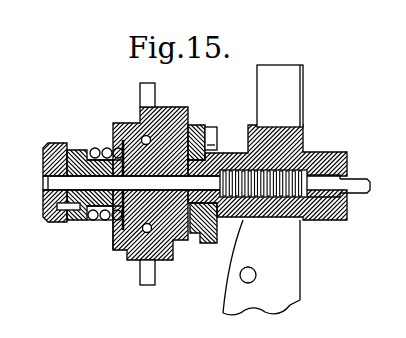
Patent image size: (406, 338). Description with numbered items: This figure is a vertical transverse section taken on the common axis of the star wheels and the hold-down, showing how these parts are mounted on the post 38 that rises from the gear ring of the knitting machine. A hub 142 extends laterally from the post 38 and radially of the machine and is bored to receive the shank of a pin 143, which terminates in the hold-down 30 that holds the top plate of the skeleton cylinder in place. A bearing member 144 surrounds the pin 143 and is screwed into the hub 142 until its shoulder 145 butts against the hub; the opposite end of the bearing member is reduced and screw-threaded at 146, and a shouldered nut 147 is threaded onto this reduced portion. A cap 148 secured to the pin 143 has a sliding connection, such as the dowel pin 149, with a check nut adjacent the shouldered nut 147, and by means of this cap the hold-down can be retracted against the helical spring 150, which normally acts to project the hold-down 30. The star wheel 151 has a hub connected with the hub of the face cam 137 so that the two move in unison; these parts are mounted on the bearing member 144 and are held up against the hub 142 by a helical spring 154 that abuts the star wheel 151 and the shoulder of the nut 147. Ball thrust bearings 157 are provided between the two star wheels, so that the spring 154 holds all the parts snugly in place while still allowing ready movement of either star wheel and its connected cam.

The hold-down 30 is at (362, 194).
The post 38 is at (290, 289).
The face cam 137 is at (204, 245).
The hub 142 is at (233, 156).
The pin 143 is at (52, 186).
The bearing member 144 is at (172, 258).
The shoulder 145 is at (221, 152).
The reduced screw-threaded portion 146 is at (85, 150).
The shouldered nut 147 is at (95, 220).
The cap 148 is at (52, 143).
The dowel pin 149 is at (62, 212).
The helical spring 150 is at (303, 158).
The star wheel 151 is at (122, 240).
The helical spring 154 is at (100, 222).
The ball thrust bearings 157 is at (150, 137).